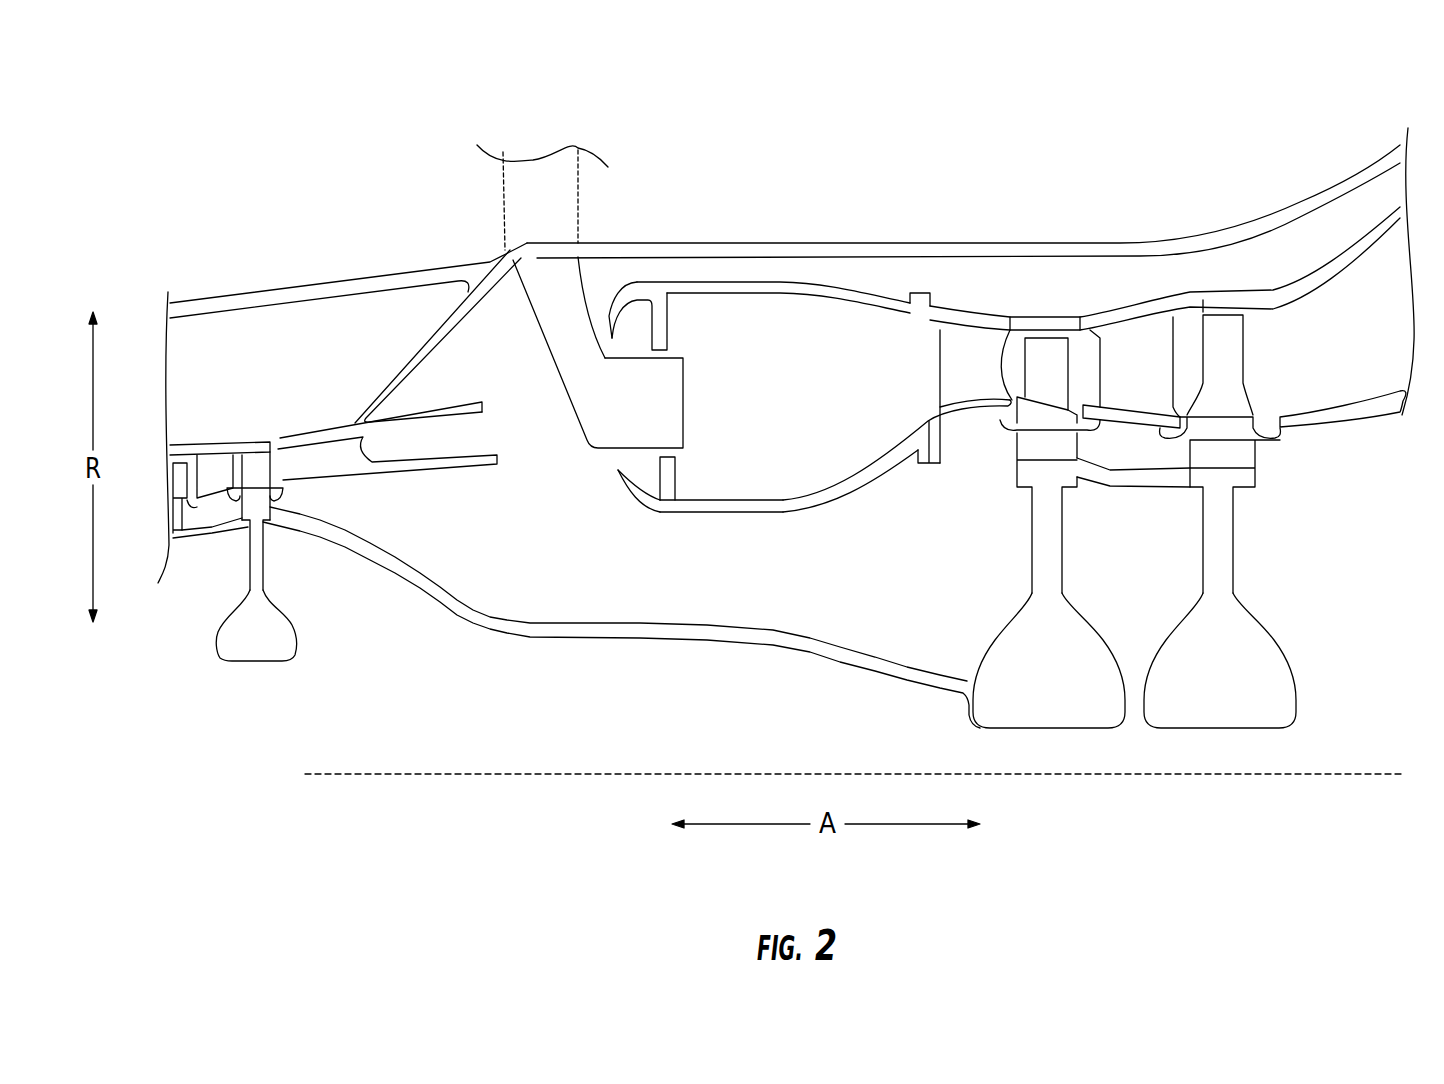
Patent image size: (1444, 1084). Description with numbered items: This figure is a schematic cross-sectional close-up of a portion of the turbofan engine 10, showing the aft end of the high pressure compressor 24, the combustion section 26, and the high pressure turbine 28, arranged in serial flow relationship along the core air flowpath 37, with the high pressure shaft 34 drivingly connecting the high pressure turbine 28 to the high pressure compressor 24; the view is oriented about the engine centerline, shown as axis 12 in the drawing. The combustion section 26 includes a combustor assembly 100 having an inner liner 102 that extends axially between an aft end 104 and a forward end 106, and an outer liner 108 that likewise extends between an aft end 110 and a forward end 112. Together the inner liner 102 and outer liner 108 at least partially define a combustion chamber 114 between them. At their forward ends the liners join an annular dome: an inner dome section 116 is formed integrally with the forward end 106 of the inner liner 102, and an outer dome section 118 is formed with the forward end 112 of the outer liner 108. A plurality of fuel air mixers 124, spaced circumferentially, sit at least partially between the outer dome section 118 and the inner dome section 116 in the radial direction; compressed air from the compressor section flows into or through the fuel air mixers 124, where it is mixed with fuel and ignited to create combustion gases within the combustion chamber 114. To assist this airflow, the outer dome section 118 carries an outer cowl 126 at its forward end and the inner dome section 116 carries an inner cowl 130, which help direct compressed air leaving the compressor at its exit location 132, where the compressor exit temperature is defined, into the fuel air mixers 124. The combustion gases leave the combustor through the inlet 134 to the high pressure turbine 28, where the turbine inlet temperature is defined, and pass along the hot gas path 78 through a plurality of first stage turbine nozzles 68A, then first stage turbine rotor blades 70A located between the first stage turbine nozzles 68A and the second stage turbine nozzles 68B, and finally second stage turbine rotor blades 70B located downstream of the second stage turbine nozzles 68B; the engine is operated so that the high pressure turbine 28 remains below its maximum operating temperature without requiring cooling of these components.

The turbofan engine 10 is at (828, 110).
The longitudinal centerline axis 12 is at (430, 773).
The high pressure compressor 24 is at (190, 408).
The combustion section 26 is at (880, 212).
The high pressure turbine 28 is at (1155, 273).
The high pressure shaft 34 is at (627, 638).
The core air flowpath 37 is at (1368, 388).
The hot gas path 78 is at (1368, 335).
The first stage turbine nozzles 68A is at (970, 350).
The second stage turbine nozzles 68B is at (1135, 383).
The first stage turbine rotor blades 70A is at (1045, 360).
The second stage turbine rotor blades 70B is at (1230, 333).
The combustor assembly 100 is at (788, 363).
The inner liner 102 is at (800, 512).
The aft end of inner liner 104 is at (910, 480).
The forward end of inner liner 106 is at (698, 529).
The outer liner 108 is at (808, 282).
The aft end of outer liner 110 is at (898, 278).
The forward end of outer liner 112 is at (688, 276).
The combustion chamber 114 is at (808, 414).
The inner dome section 116 is at (615, 511).
The outer dome section 118 is at (612, 278).
The fuel air mixers 124 is at (654, 421).
The outer cowl 126 is at (610, 308).
The inner cowl 130 is at (637, 500).
The exit location of compressor section 132 is at (290, 465).
The inlet to turbine section 134 is at (912, 398).